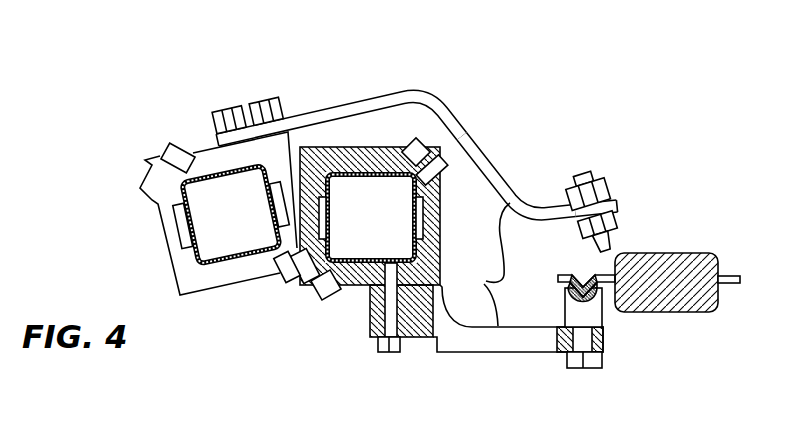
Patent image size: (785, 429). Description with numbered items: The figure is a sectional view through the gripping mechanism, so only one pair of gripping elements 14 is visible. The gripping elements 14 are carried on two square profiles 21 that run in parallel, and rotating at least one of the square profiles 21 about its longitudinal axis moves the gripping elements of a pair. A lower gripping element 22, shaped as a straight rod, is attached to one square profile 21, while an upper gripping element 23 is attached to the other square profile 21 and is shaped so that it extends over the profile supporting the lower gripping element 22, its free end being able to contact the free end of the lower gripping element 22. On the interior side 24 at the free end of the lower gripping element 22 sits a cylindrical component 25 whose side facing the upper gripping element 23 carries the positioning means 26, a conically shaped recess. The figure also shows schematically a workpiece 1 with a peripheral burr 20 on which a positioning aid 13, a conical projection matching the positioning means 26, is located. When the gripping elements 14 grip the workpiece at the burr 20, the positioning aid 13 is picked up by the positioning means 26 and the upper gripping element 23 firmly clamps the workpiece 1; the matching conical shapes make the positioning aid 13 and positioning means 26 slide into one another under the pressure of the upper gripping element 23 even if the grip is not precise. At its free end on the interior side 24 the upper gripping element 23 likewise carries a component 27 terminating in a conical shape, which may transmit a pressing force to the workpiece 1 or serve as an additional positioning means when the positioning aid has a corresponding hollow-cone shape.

The workpiece 1 is at (683, 253).
The positioning aid 13 is at (585, 275).
The gripping elements 14 is at (414, 171).
The burr 20 is at (732, 283).
The square profiles 21 is at (363, 288).
The lower gripping element 22 is at (459, 343).
The upper gripping element 23 is at (478, 145).
The interior side 24 is at (483, 264).
The cylindrical component 25 is at (575, 305).
The positioning means 26 is at (603, 300).
The component terminating in a conical shape 27 is at (613, 233).